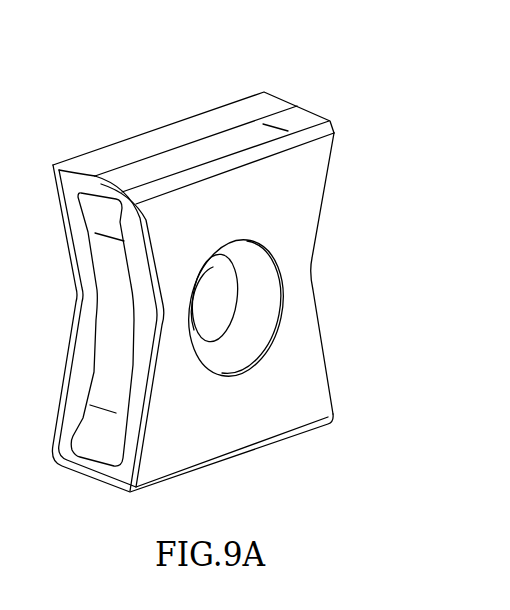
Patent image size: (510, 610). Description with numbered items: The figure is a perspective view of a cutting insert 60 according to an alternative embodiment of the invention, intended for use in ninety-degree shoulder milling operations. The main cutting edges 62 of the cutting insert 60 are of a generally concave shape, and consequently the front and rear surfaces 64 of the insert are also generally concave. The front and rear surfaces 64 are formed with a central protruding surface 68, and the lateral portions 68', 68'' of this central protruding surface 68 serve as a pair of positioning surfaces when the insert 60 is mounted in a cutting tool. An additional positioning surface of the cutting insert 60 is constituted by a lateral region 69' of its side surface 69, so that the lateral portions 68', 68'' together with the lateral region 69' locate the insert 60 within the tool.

The cutting insert 60 is at (100, 110).
The main cutting edges 62 is at (66, 368).
The front and rear surfaces 64 is at (334, 190).
The central protruding surface 68 is at (102, 329).
The lateral portion 68' is at (68, 239).
The lateral portion 68'' is at (62, 396).
The side surface 69 is at (193, 126).
The lateral region 69' is at (282, 79).